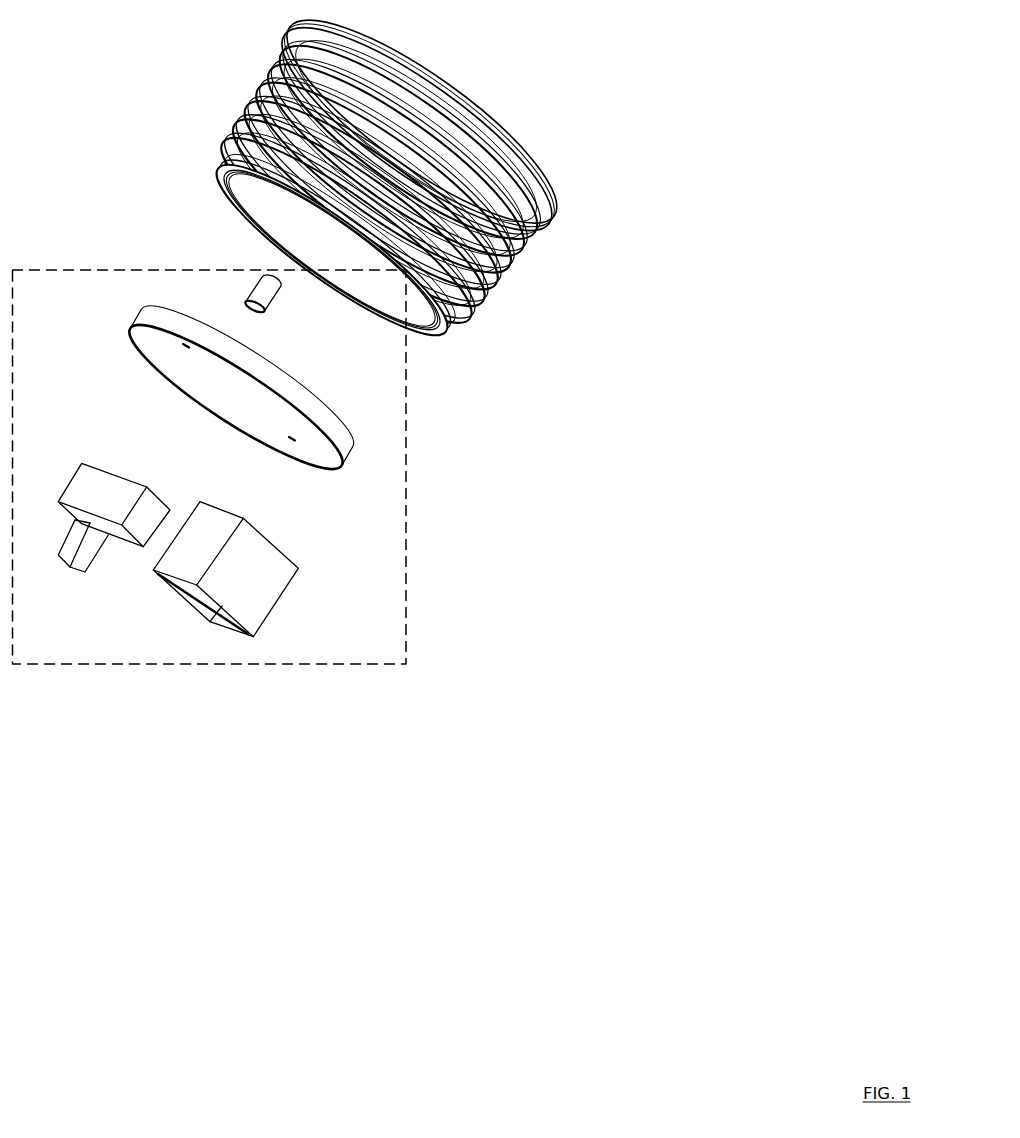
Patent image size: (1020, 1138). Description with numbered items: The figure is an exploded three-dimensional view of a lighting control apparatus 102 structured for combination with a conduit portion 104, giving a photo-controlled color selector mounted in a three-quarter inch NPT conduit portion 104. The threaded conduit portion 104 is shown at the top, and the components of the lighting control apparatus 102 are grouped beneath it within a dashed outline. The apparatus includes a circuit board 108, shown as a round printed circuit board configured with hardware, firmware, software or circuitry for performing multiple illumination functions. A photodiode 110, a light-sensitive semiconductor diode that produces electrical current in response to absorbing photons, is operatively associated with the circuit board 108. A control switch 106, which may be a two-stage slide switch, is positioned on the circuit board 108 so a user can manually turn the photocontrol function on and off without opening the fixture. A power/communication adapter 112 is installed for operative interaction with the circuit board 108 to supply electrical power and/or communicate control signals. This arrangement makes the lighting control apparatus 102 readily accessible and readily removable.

The lighting control apparatus 102 is at (125, 665).
The conduit portion 104 is at (528, 230).
The control switch 106 is at (85, 572).
The circuit board 108 is at (350, 448).
The photodiode 110 is at (277, 302).
The power/communication adapter 112 is at (285, 597).